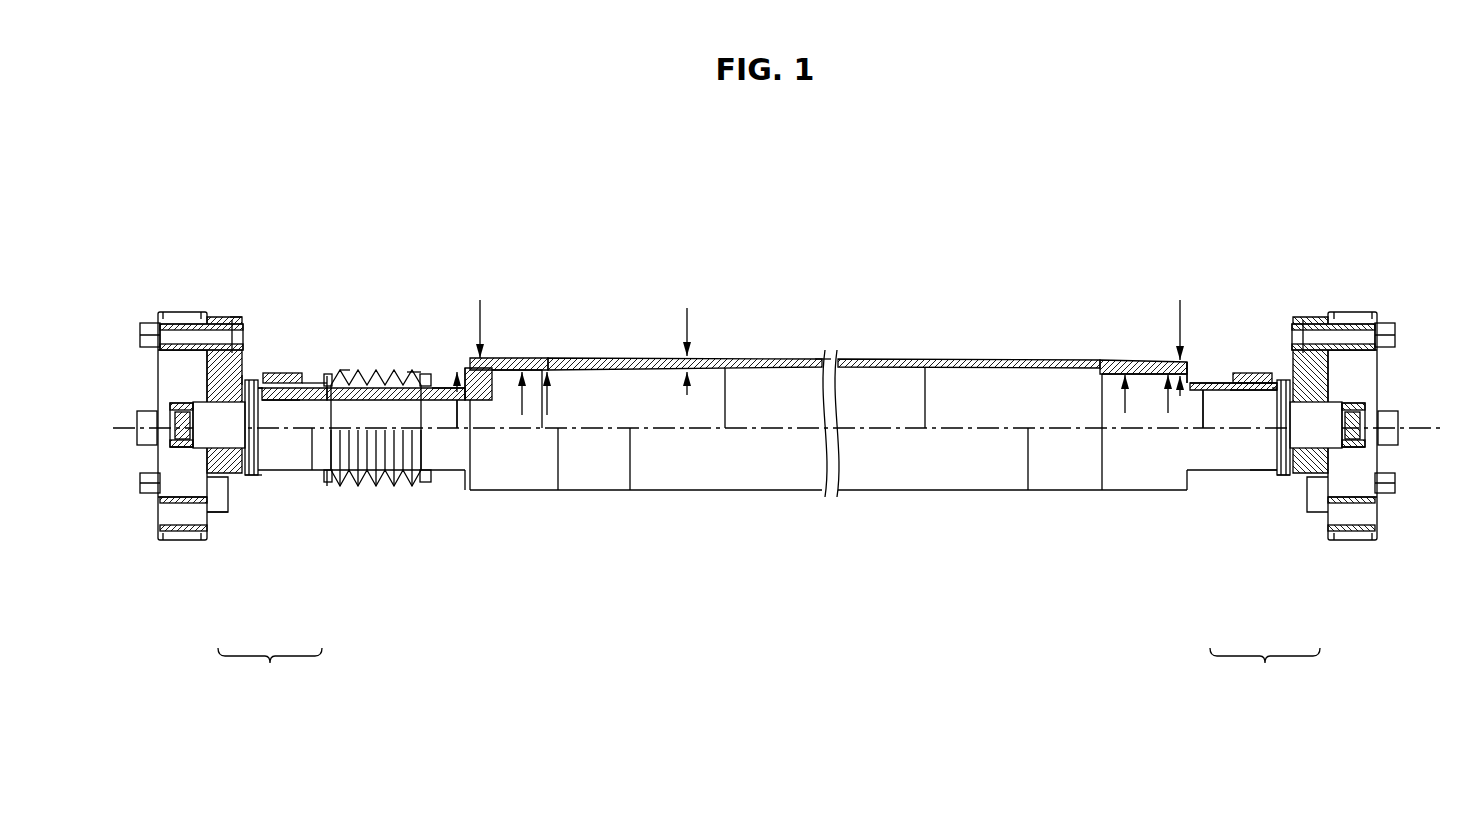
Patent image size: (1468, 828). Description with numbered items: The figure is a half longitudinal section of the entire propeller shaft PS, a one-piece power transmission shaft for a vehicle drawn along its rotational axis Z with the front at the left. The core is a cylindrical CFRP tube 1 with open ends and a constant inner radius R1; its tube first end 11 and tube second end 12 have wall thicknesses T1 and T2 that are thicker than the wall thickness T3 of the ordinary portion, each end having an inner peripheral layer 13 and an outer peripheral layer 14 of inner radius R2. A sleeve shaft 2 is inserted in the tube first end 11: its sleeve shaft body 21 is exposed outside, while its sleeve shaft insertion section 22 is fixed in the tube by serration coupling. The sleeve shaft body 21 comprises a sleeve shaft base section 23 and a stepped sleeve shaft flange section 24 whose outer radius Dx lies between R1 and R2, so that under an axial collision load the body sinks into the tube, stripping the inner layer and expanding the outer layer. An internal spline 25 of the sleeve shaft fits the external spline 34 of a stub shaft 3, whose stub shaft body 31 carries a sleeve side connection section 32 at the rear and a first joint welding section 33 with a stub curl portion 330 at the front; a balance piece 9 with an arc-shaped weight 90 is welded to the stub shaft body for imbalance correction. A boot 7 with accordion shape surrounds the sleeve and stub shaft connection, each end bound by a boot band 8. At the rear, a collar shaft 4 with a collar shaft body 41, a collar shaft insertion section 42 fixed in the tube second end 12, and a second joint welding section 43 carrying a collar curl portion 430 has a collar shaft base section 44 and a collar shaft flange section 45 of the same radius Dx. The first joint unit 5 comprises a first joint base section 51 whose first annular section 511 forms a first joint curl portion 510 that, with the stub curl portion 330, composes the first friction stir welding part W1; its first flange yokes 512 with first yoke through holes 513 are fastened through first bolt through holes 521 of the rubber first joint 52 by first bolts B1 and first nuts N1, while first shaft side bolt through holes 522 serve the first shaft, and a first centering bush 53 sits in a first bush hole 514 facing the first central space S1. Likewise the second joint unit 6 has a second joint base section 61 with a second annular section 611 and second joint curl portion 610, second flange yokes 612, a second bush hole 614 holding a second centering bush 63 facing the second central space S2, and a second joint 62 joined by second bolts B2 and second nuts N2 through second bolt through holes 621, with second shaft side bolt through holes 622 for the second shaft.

The tube 1 is at (826, 407).
The sleeve shaft 2 is at (428, 392).
The stub shaft 3 is at (322, 422).
The collar shaft 4 is at (1189, 401).
The first joint unit 5 is at (199, 382).
The second joint unit 6 is at (1337, 382).
The boot 7 is at (392, 494).
The boot band 8 is at (320, 478).
The balance piece 9 is at (304, 269).
The weight 90 is at (270, 372).
The tube first end 11 is at (523, 492).
The tube second end 12 is at (1145, 492).
The inner peripheral layer 13 is at (561, 362).
The outer peripheral layer 14 is at (535, 360).
The sleeve shaft body 21 is at (461, 291).
The sleeve shaft insertion section 22 is at (518, 368).
The sleeve shaft base section 23 is at (438, 372).
The sleeve shaft flange section 24 is at (472, 368).
The internal spline 25 is at (412, 372).
The stub shaft body 31 is at (312, 383).
The sleeve side connection section 32 is at (330, 378).
The first joint welding section 33 is at (291, 523).
The stub curl portion 330 is at (270, 474).
The external spline 34 is at (347, 368).
The collar shaft body 41 is at (1219, 274).
The collar shaft insertion section 42 is at (1136, 370).
The second joint welding section 43 is at (1246, 517).
The collar curl portion 430 is at (1270, 472).
The collar shaft base section 44 is at (1213, 384).
The collar shaft flange section 45 is at (1195, 364).
The first joint base section 51 is at (240, 406).
The first joint 52 is at (178, 303).
The first centering bush 53 is at (152, 440).
The first joint curl portion 510 is at (258, 476).
The first annular section 511 is at (252, 392).
The first flange yokes 512 is at (243, 380).
The first yoke through hole 513 is at (232, 310).
The first bush hole 514 is at (199, 535).
The first bolt through holes 521 is at (140, 328).
The first shaft side bolt through holes 522 is at (159, 497).
The second joint base section 61 is at (1278, 407).
The second joint 62 is at (1357, 310).
The second centering bush 63 is at (1368, 443).
The second joint curl portion 610 is at (1282, 478).
The second annular section 611 is at (1296, 392).
The second flange yokes 612 is at (1295, 372).
The second bush hole 614 is at (1257, 470).
The second bolt through holes 621 is at (1398, 335).
The second shaft side bolt through holes 622 is at (1360, 540).
The first bolts B1 is at (250, 378).
The second bolts B2 is at (1284, 380).
The first nuts N1 is at (152, 343).
The second nuts N2 is at (1386, 330).
The first central space S1 is at (172, 466).
The second central space S2 is at (1357, 463).
The wall thickness of tube first end T1 is at (480, 300).
The wall thickness of tube second end T2 is at (1180, 300).
The wall thickness of ordinary portions T3 is at (687, 308).
The inner radius of inner peripheral layer R1 is at (522, 415).
The inner radius of outer peripheral layer R2 is at (547, 415).
The outer radius of flange section Dx is at (458, 418).
The first friction stir welding part W1 is at (769, 673).
The propeller shaft PS is at (823, 286).
The rotational axis Z is at (1410, 423).